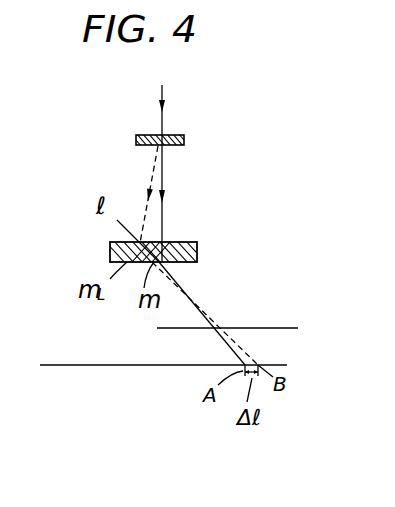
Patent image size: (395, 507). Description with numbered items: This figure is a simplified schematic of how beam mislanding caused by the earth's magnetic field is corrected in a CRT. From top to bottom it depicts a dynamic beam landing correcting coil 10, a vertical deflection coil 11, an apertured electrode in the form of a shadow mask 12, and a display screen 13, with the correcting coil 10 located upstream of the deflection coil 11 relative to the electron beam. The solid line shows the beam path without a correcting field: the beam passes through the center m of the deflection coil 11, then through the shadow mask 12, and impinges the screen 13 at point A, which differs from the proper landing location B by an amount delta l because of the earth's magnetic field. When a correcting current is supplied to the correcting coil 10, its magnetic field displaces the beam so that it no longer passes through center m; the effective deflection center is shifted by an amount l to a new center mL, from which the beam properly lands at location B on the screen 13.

The dynamic beam landing correcting coil 10 is at (184, 140).
The vertical deflection coil 11 is at (183, 243).
The shadow mask 12 is at (250, 326).
The display screen 13 is at (275, 363).